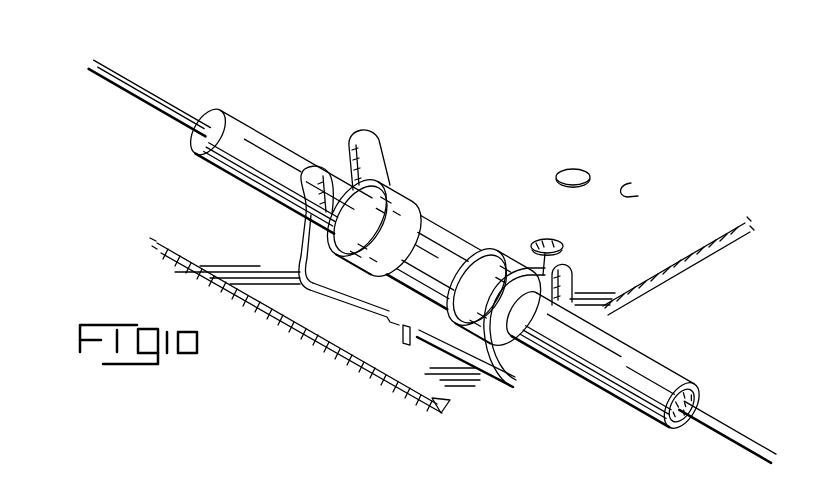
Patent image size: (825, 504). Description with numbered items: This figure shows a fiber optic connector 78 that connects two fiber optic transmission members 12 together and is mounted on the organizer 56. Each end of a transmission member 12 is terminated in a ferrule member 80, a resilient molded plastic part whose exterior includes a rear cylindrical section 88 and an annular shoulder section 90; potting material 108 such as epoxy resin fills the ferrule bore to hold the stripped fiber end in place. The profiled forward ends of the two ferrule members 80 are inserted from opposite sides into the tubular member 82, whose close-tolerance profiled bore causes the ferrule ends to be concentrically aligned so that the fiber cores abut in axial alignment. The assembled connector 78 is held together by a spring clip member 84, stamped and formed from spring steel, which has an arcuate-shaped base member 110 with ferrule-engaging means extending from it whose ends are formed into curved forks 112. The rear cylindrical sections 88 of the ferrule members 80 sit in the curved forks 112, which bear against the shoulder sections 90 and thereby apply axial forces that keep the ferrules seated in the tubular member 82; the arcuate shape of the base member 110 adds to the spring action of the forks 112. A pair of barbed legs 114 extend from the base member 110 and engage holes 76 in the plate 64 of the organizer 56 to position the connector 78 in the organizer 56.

The fiber optic transmission member 12 is at (175, 100).
The ferrule member 80 is at (298, 150).
The rear cylindrical section 88 is at (240, 180).
The potting material 108 is at (702, 392).
The tubular member 82 is at (463, 265).
The fiber optic connector 78 is at (415, 317).
The curved fork 112 is at (300, 252).
The arcuate-shaped base member 110 is at (385, 318).
The barbed leg 114 is at (400, 338).
The spring clip member 84 is at (462, 378).
The annular shoulder section 90 is at (555, 246).
The hole 76 is at (567, 170).
The plate 64 is at (284, 312).
The organizer 56 is at (712, 258).